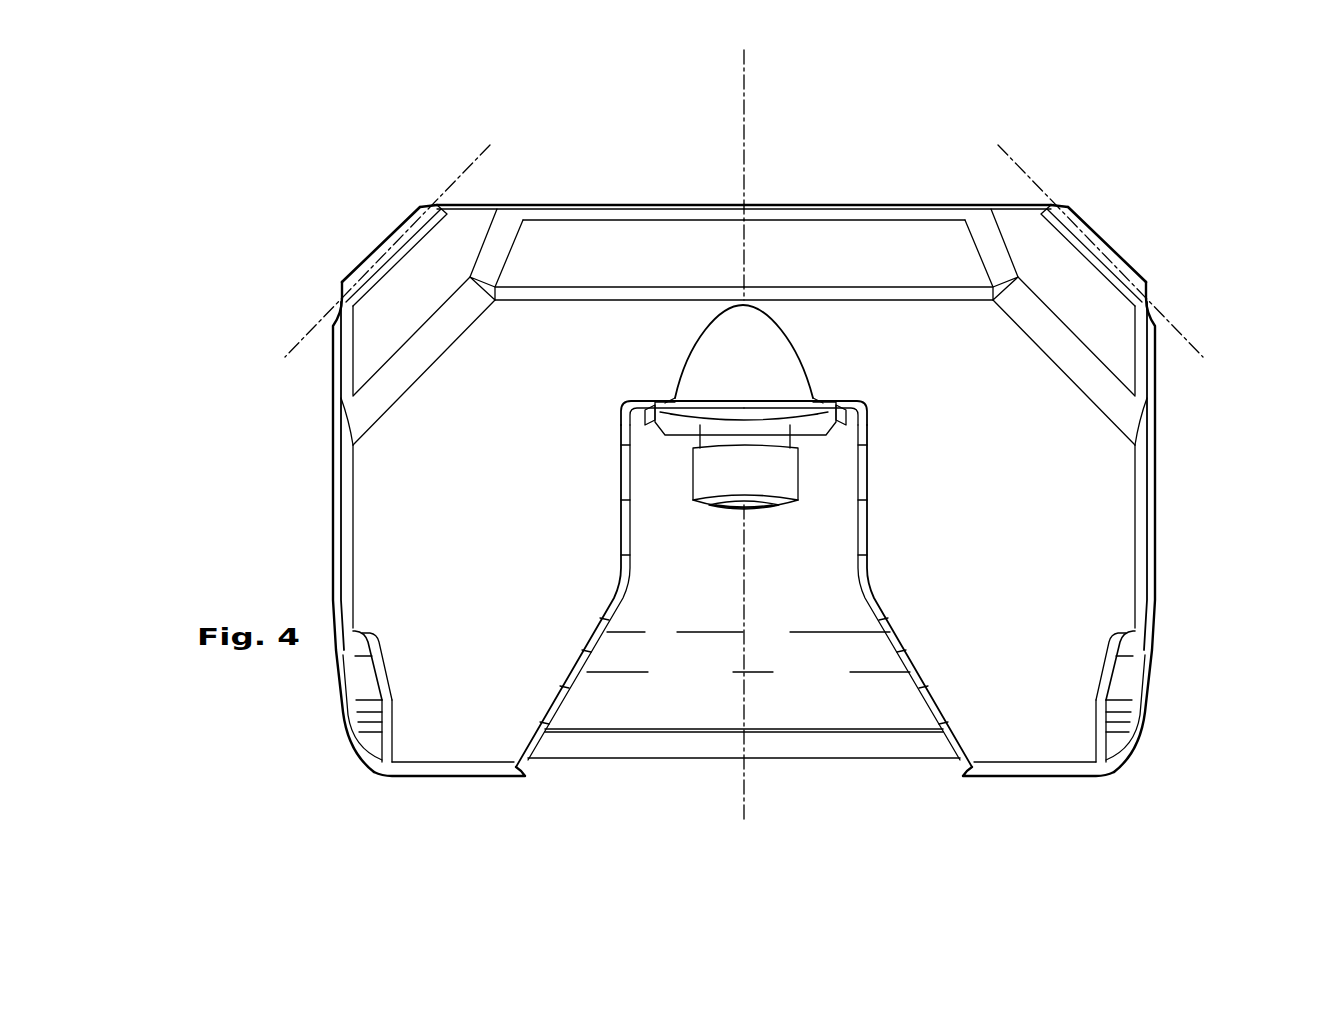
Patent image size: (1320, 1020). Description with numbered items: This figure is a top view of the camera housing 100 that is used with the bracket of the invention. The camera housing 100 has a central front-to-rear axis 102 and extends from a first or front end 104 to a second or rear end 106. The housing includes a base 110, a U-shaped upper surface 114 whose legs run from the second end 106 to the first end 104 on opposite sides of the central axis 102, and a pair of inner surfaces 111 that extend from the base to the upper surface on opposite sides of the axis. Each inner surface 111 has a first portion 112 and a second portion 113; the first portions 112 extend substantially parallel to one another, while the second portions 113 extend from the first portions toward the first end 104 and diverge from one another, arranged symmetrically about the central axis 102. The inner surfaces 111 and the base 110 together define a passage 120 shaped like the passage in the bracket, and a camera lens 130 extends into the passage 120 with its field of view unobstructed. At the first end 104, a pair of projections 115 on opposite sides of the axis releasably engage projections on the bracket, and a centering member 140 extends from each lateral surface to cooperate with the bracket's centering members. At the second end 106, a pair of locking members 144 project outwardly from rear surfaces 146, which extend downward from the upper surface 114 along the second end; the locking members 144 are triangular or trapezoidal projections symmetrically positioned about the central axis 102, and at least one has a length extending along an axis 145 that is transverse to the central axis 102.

The camera housing 100 is at (362, 157).
The central front-to-rear axis 102 is at (744, 98).
The first end 104 is at (1100, 790).
The second end 106 is at (1060, 194).
The base 110 is at (741, 714).
The inner surfaces 111 is at (636, 606).
The first portion 112 is at (636, 508).
The second portion 113 is at (595, 640).
The upper surface 114 is at (775, 268).
The projections 115 is at (447, 777).
The passage 120 is at (787, 716).
The camera lens 130 is at (713, 472).
The centering member 140 is at (370, 714).
The locking members 144 is at (378, 252).
The axis 145 is at (318, 331).
The rear surfaces 146 is at (413, 229).